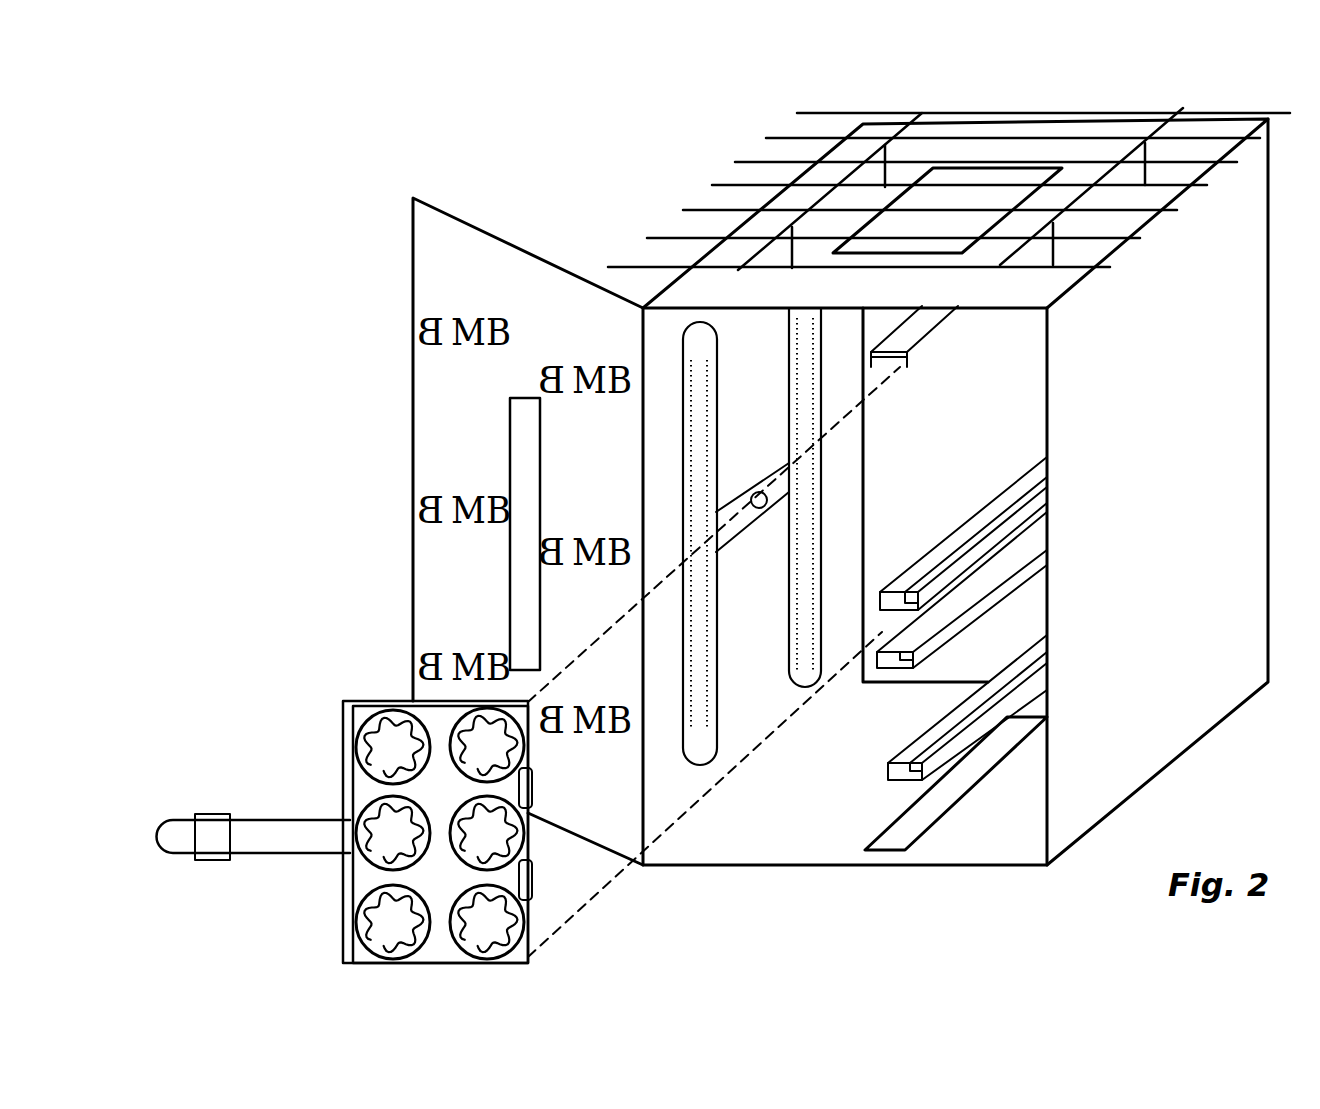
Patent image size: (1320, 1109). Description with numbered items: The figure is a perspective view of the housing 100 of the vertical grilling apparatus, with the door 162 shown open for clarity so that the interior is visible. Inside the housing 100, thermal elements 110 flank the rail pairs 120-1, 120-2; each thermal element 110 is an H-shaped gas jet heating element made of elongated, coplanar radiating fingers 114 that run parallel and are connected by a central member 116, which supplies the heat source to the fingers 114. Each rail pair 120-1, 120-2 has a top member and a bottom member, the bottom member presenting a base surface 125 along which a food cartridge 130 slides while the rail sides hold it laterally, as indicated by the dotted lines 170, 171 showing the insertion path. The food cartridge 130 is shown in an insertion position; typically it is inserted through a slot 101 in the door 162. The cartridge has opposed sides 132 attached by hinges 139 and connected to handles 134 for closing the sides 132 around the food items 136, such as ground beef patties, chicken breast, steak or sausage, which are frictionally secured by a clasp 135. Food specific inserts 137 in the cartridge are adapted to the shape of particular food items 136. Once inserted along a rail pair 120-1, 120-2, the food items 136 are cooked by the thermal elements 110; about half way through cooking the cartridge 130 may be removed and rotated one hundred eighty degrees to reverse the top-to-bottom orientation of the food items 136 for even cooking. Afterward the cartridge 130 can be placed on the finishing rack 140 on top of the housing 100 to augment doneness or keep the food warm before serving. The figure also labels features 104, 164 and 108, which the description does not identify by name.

The housing 100 is at (1176, 436).
The top opening 104 is at (955, 233).
The finishing rack 140 is at (608, 267).
The door 162 is at (432, 203).
The indicia markings 164 is at (458, 650).
The slot 101 is at (528, 400).
The dotted line 170 is at (607, 623).
The dotted line 171 is at (585, 908).
The thermal elements 110 is at (683, 445).
The radiating fingers 114 is at (716, 480).
The central member 116 is at (752, 528).
The rail pair 120-1 is at (947, 540).
The base surface 125 is at (903, 593).
The rail pair 120-2 is at (940, 638).
The floor rail 108 is at (948, 785).
The food cartridge 130 is at (434, 805).
The opposed sides 132 is at (340, 735).
The food items 136 is at (386, 748).
The food specific inserts 137 is at (367, 897).
The hinges 139 is at (533, 798).
The handles 134 is at (255, 822).
The clasp 135 is at (212, 813).